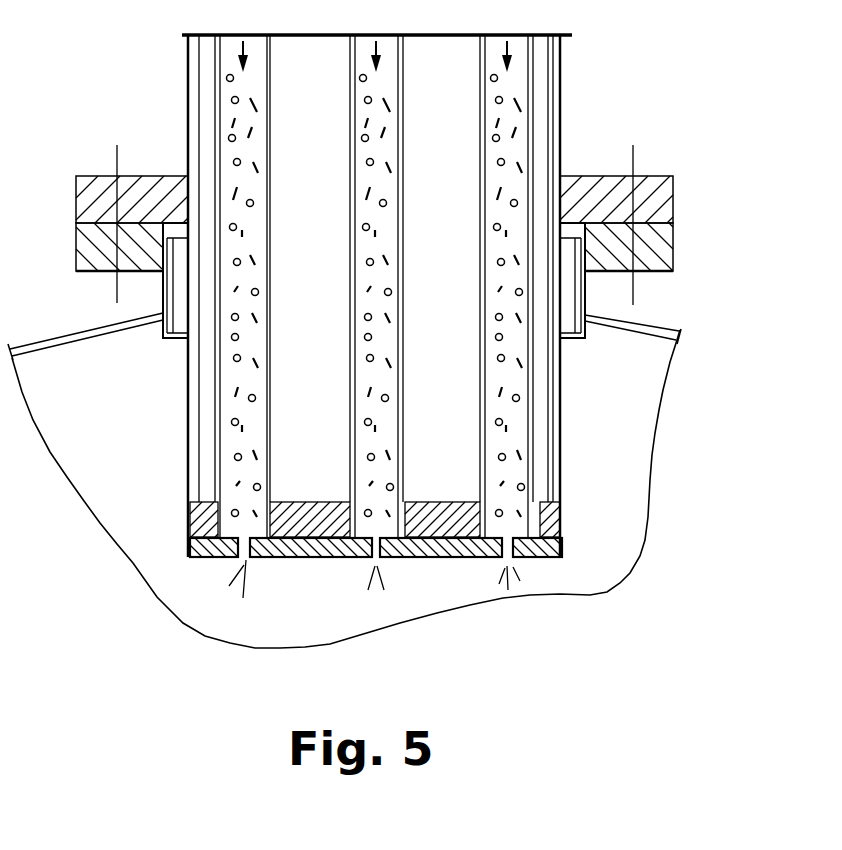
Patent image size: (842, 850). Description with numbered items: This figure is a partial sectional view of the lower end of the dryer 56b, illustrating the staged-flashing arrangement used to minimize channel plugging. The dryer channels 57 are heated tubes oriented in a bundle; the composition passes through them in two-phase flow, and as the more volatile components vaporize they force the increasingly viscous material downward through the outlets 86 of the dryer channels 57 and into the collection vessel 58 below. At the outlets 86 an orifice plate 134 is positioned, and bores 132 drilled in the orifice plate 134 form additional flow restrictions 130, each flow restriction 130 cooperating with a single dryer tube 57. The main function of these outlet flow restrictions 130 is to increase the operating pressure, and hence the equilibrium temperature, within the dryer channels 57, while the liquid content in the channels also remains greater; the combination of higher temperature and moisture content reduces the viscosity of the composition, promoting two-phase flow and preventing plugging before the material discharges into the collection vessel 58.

The dryer 56b is at (134, 104).
The dryer channels 57 is at (604, 82).
The collection vessel 58 is at (647, 408).
The outlets 86 is at (592, 503).
The flow restrictions 130 is at (510, 560).
The bores 132 is at (248, 556).
The orifice plate 134 is at (563, 553).